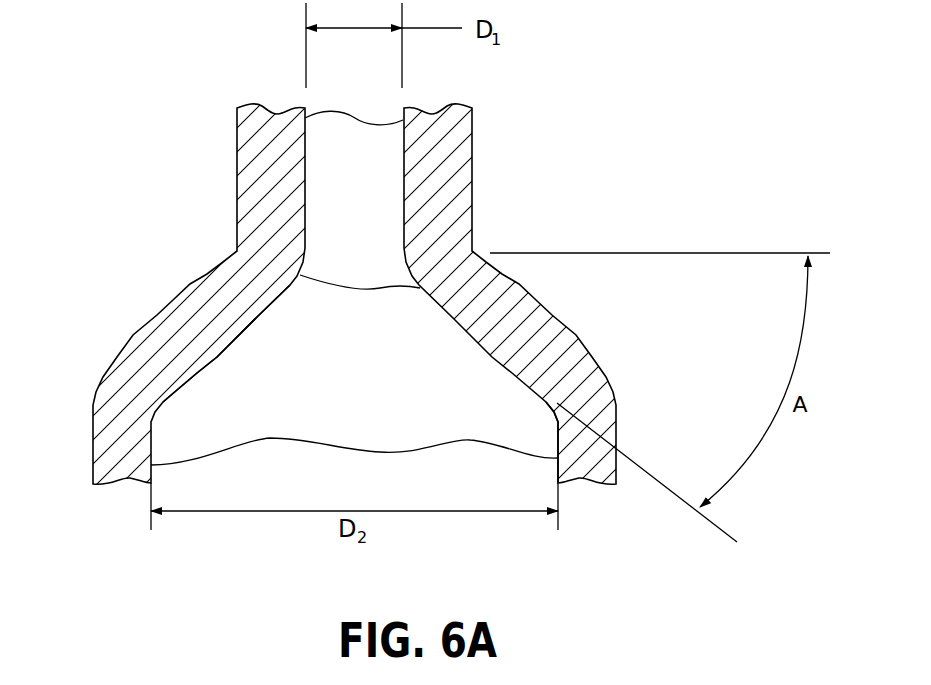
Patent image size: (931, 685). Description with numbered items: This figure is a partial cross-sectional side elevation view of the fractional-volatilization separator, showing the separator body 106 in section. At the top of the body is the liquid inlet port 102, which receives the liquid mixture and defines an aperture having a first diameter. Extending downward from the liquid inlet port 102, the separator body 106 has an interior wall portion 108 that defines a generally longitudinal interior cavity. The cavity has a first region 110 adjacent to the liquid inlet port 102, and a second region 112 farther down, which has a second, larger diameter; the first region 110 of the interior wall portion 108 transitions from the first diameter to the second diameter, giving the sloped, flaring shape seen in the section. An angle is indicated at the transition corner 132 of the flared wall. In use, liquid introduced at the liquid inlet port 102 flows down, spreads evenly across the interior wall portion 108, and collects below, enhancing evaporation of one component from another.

The liquid inlet port 102 is at (355, 228).
The separator body 106 is at (133, 335).
The interior wall portion 108 is at (221, 360).
The first region 110 is at (470, 338).
The second region 112 is at (557, 430).
The transition shoulder 132 is at (420, 287).